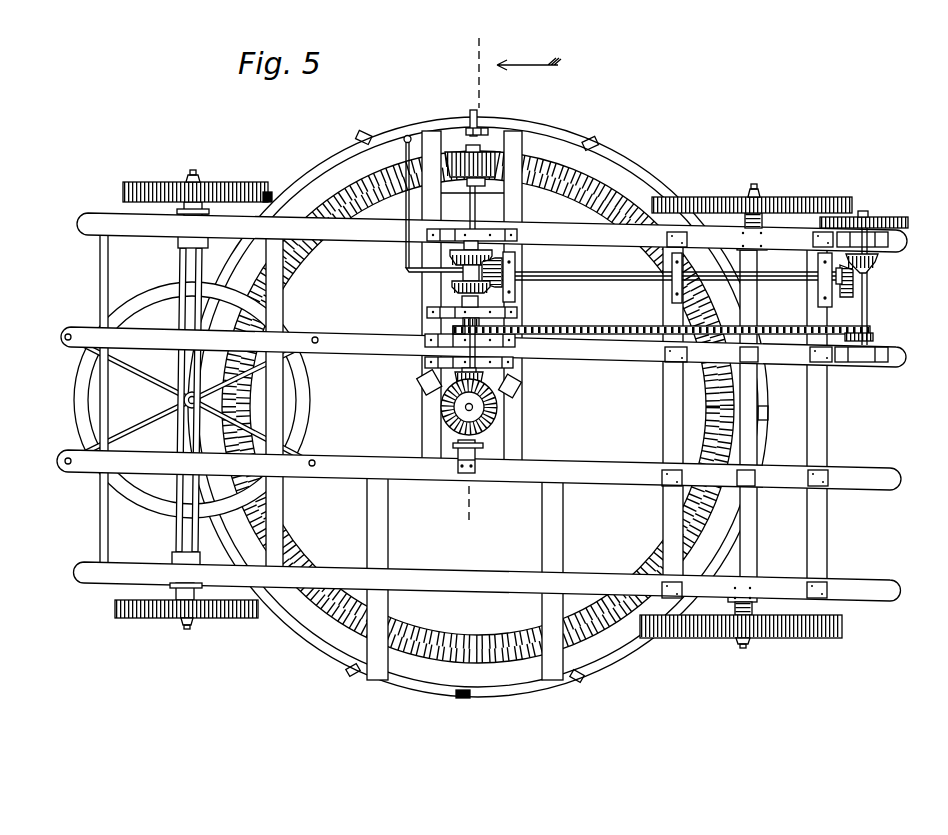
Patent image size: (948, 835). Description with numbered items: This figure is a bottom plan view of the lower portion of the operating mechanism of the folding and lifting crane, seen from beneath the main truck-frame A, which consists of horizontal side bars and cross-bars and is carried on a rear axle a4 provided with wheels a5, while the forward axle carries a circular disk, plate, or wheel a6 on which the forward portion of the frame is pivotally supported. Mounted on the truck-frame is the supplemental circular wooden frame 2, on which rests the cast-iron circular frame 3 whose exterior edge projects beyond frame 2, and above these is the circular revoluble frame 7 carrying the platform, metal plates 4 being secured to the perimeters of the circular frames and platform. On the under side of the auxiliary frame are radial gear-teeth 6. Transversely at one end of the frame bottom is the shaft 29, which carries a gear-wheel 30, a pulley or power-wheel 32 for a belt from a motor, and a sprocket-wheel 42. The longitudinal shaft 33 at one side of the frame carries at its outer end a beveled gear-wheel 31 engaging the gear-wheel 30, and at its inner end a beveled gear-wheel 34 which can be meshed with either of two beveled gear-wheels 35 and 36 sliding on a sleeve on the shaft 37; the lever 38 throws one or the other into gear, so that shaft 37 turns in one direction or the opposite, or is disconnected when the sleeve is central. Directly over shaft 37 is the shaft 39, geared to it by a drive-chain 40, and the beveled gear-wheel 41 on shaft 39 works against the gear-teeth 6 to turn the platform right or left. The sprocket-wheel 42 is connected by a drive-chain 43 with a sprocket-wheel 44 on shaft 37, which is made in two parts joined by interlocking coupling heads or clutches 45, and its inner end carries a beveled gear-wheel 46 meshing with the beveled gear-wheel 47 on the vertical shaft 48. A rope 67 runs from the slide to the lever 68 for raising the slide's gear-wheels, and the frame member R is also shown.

The supplemental circular wooden frame 2 is at (478, 413).
The circular frame 3 is at (428, 693).
The metal plates 4 is at (462, 698).
The radial gear-teeth 6 is at (504, 644).
The circular revoluble frame 7 is at (511, 283).
The shaft 29 is at (868, 311).
The gear-wheel 30 is at (876, 266).
The beveled gear-wheel 31 is at (850, 299).
The pulley or power-wheel 32 is at (909, 226).
The shaft 33 is at (790, 281).
The beveled gear-wheel 34 is at (503, 270).
The beveled gear-wheel 35 is at (452, 288).
The beveled gear-wheel 36 is at (450, 256).
The shaft 37 is at (462, 302).
The lever 38 is at (406, 208).
The shaft 39 is at (476, 213).
The drive-chain 40 is at (515, 302).
The beveled gear-wheel 41 is at (467, 183).
The sprocket-wheel 42 is at (880, 338).
The drive-chain 43 is at (601, 332).
The sprocket-wheel 44 is at (453, 330).
The interlocking coupling heads or clutches 45 is at (480, 322).
The beveled gear-wheel 46 is at (485, 382).
The beveled gear-wheel 47 is at (441, 407).
The vertical shaft 48 is at (478, 408).
The rope 67 is at (472, 148).
The lever 68 is at (482, 120).
The rear axle a4 is at (757, 533).
The wheels a5 is at (823, 198).
The circular disk, plate, or wheel a6 is at (73, 407).
The main truck-frame A is at (827, 522).
The frame beam R is at (80, 573).